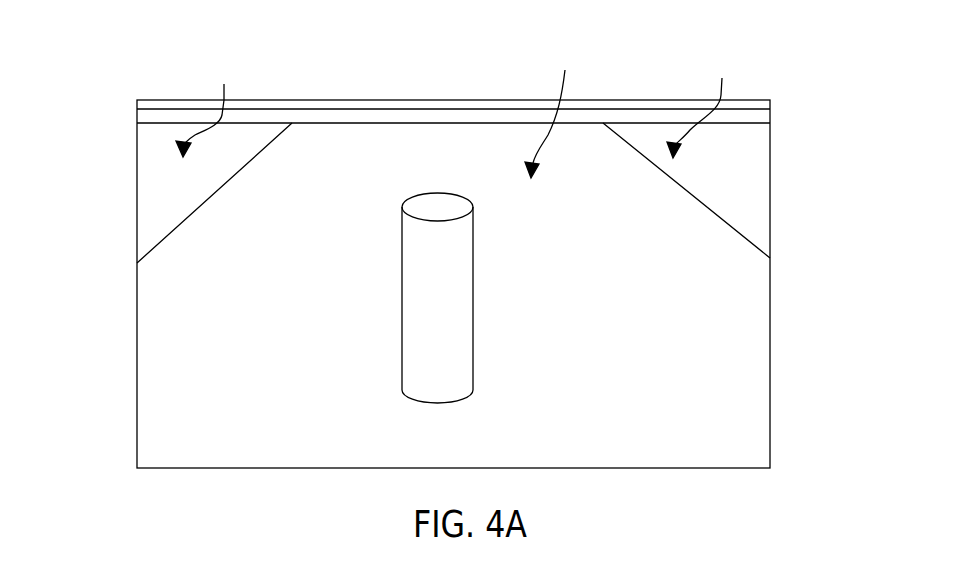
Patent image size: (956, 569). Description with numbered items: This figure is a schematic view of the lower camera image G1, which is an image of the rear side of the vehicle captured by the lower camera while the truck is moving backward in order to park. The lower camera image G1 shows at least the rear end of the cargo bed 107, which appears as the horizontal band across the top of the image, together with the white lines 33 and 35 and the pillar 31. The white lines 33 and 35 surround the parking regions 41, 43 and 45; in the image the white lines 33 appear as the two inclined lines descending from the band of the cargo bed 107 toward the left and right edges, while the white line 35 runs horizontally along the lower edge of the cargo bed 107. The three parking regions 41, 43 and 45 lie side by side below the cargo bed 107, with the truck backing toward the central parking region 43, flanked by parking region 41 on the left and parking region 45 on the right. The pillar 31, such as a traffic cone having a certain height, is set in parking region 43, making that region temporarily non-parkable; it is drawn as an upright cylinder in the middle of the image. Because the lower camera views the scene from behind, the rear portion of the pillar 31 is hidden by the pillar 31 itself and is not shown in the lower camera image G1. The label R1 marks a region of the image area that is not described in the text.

The cargo bed 107 is at (753, 100).
The lower camera image G1 is at (80, 71).
The first region R1 is at (137, 305).
The pillar 31 is at (420, 305).
The white lines 33 is at (203, 205).
The white lines 35 is at (432, 123).
The parking region 41 is at (209, 105).
The parking region 43 is at (554, 108).
The parking region 45 is at (702, 103).